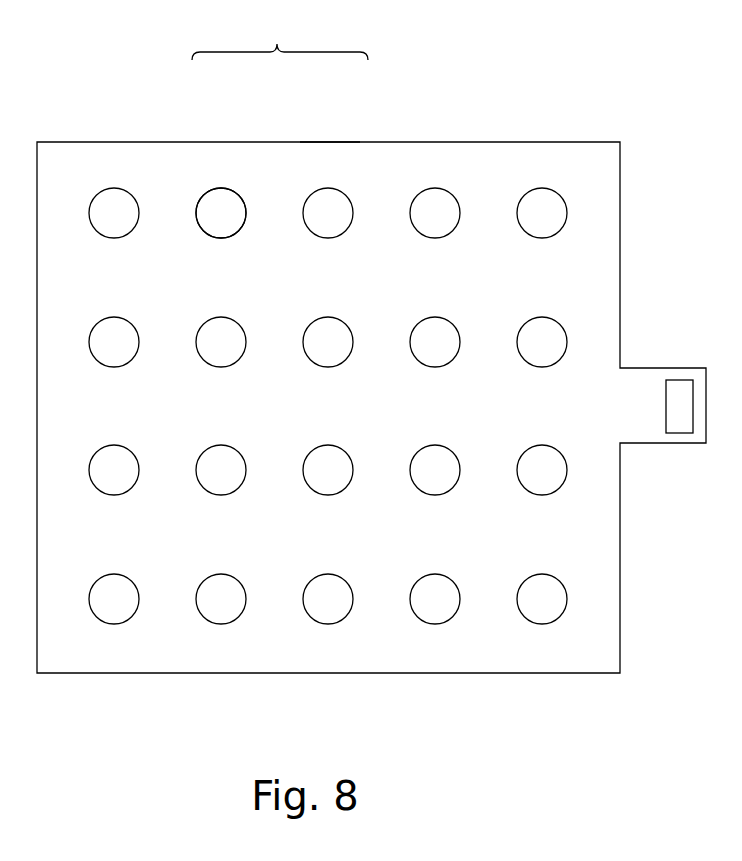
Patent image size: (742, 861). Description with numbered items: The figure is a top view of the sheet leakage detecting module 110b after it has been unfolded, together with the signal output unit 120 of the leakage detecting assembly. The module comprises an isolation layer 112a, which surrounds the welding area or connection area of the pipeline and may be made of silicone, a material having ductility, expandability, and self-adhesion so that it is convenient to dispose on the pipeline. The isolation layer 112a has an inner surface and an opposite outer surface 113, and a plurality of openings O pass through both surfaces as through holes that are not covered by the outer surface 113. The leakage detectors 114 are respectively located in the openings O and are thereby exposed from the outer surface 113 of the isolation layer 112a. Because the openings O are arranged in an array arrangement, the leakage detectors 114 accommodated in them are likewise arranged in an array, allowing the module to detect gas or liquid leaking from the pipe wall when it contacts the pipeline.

The sheet leakage detecting module 110b is at (280, 35).
The isolation layer 112a is at (333, 153).
The outer surface 113 is at (388, 158).
The leakage detectors 114 is at (218, 189).
The openings O is at (182, 195).
The signal output unit 120 is at (682, 385).